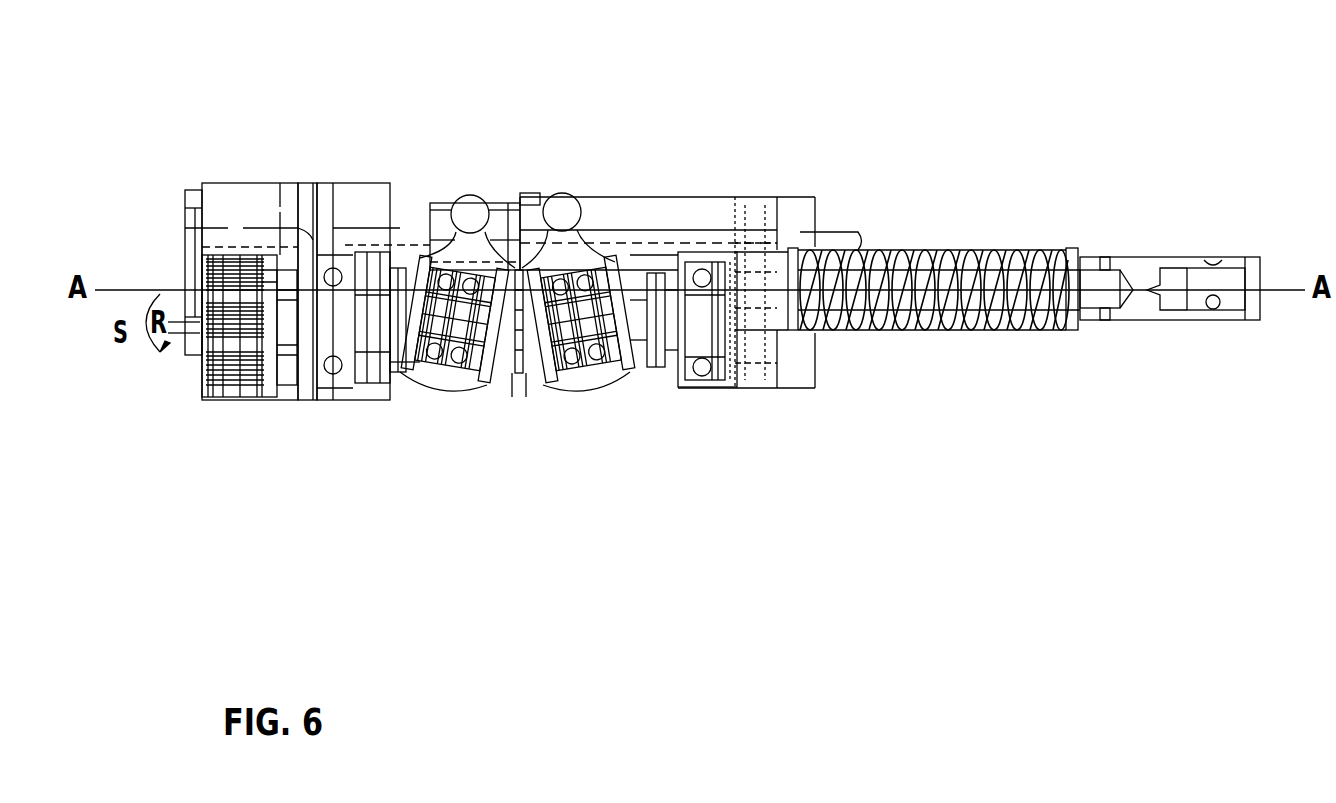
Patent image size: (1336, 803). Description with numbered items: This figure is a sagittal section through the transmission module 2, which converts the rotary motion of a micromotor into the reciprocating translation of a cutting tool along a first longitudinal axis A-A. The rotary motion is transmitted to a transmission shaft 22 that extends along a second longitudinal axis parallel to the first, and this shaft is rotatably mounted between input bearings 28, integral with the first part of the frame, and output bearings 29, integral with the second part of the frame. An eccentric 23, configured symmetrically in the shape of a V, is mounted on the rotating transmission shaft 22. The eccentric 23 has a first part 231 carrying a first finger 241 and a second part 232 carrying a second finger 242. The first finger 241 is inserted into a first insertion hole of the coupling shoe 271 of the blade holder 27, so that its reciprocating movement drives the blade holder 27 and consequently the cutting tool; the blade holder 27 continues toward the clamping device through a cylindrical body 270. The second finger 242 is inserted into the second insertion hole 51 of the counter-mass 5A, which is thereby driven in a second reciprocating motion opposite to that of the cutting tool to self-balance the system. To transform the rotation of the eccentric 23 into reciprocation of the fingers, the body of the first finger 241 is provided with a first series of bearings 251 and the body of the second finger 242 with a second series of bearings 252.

The transmission module 2 is at (247, 193).
The transmission shaft 22 is at (287, 393).
The input bearings 28 is at (327, 393).
The second part of the eccentric 232 is at (385, 390).
The second series of bearings 252 is at (452, 380).
The eccentric 23 is at (505, 380).
The first series of bearings 251 is at (608, 385).
The first part of the eccentric 231 is at (660, 380).
The output bearings 29 is at (703, 380).
The second finger 242 is at (463, 197).
The second insertion hole 51 is at (475, 197).
The section line 5A is at (508, 203).
The first finger 241 is at (567, 205).
The coupling shoe 271 is at (668, 205).
The blade holder 27 is at (818, 180).
The cylindrical body 270 is at (1038, 258).